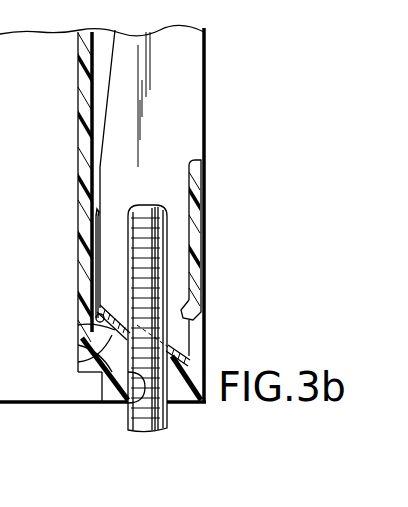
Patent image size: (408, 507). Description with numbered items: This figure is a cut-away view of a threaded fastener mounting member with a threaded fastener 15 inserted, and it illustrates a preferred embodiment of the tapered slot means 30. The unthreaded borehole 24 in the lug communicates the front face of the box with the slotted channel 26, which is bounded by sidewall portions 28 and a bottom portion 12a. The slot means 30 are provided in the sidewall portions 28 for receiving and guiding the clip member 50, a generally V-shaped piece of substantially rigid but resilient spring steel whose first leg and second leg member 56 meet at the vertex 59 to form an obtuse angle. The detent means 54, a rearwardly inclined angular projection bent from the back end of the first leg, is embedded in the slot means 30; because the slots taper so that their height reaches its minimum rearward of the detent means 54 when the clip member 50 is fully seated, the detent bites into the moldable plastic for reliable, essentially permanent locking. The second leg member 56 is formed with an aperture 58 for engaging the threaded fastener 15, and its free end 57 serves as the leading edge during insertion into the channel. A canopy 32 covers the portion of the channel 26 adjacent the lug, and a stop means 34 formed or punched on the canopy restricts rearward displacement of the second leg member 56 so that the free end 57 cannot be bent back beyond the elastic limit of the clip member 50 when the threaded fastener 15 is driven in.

The bottom portion 12a is at (76, 131).
The threaded fastener 15 is at (148, 213).
The unthreaded borehole 24 is at (130, 403).
The slotted channel 26 is at (172, 127).
The sidewall portions 28 is at (182, 76).
The slot means 30 is at (100, 47).
The canopy 32 is at (194, 162).
The stop means 34 is at (200, 307).
The clip member 50 is at (94, 241).
The detent means 54 is at (95, 216).
The second leg member 56 is at (82, 344).
The free end 57 is at (206, 358).
The aperture 58 is at (84, 366).
The vertex 59 is at (99, 318).